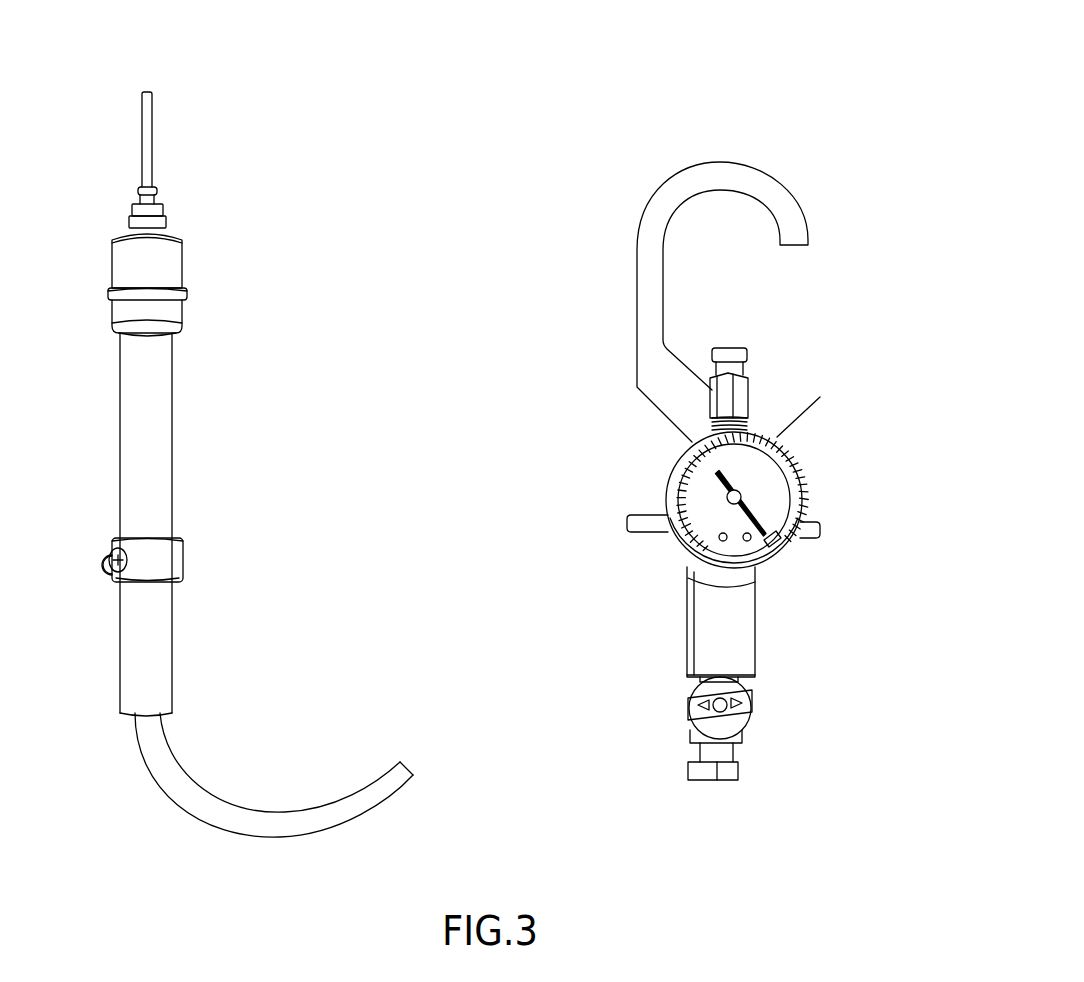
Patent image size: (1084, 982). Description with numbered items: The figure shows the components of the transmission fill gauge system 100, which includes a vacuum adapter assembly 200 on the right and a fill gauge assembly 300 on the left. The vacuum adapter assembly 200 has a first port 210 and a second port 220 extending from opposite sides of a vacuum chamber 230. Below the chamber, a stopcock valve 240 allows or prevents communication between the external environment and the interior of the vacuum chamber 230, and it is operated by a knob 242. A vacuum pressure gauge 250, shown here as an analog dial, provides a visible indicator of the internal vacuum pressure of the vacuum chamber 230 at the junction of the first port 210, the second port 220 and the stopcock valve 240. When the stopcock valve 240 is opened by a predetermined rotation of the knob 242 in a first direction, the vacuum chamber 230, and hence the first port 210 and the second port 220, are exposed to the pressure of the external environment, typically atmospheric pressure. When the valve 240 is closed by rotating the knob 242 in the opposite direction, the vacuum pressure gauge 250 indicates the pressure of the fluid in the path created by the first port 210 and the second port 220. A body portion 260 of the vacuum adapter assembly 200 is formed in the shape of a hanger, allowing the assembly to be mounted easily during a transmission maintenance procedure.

The transmission fill gauge system 100 is at (433, 57).
The vacuum adapter assembly 200 is at (613, 254).
The first port 210 is at (640, 523).
The second port 220 is at (807, 532).
The vacuum chamber 230 is at (680, 580).
The stopcock valve 240 is at (687, 727).
The knob 242 is at (753, 695).
The vacuum pressure gauge 250 is at (767, 447).
The body portion 260 is at (717, 170).
The fill gauge assembly 300 is at (215, 272).